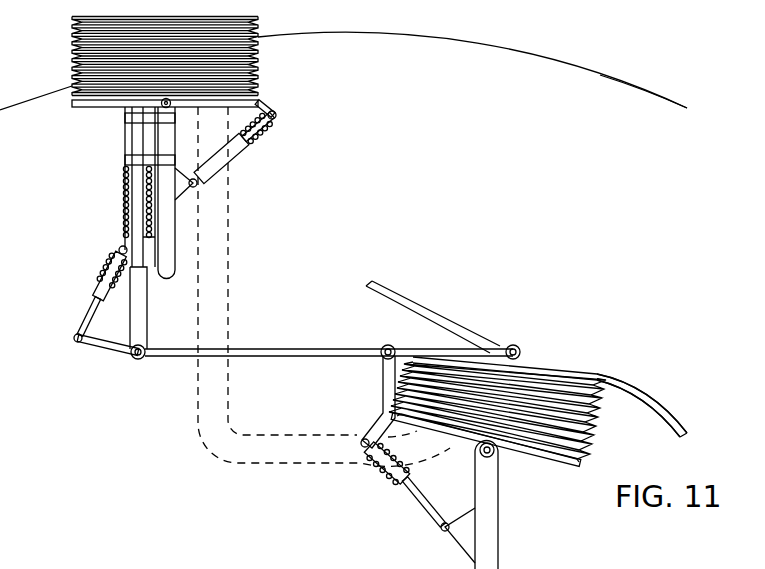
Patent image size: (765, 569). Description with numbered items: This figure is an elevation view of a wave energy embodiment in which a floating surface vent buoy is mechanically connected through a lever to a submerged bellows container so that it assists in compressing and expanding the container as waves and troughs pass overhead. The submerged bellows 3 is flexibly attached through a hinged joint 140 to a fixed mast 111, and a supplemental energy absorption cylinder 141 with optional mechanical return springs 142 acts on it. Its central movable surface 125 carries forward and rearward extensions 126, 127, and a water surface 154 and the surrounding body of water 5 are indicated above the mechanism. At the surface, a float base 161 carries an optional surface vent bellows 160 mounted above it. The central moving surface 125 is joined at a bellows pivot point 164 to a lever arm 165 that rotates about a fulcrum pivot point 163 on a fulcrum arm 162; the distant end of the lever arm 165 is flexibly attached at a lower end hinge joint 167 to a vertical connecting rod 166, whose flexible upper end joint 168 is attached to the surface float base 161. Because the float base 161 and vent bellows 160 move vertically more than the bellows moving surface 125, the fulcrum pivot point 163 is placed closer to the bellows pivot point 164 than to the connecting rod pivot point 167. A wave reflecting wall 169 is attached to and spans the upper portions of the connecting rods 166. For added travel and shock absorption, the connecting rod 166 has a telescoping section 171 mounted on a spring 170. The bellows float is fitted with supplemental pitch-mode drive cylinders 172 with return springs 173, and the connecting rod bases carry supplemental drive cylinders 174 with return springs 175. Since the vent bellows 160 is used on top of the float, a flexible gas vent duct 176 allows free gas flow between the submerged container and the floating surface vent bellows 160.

The bellows 3 is at (580, 438).
The frame 5 is at (633, 88).
The fixed mast 111 is at (500, 520).
The central movable surface 125 is at (561, 362).
The strip end 126 is at (652, 406).
The arm 127 is at (380, 290).
The hinged joint 140 is at (498, 454).
The cylinder 141 is at (425, 517).
The springs 142 is at (378, 474).
The rail 154 is at (385, 38).
The surface vent bellows 160 is at (92, 62).
The surface float base 161 is at (82, 106).
The fulcrum arm 162 is at (383, 385).
The fulcrum pivot point 163 is at (384, 346).
The bellows pivot point 164 is at (519, 348).
The lever arm 165 is at (278, 349).
The vertical connecting rod 166 is at (124, 170).
The lower end hinge joint 167 is at (139, 362).
The upper end joint 168 is at (163, 107).
The wave reflecting wall 169 is at (178, 232).
The spring 170 is at (122, 215).
The telescoping section 171 is at (126, 233).
The drive cylinder 172 is at (236, 159).
The return spring 173 is at (277, 127).
The supplemental drive cylinder 174 is at (87, 304).
The return spring 175 is at (113, 254).
The flexible gas vent duct 176 is at (231, 298).